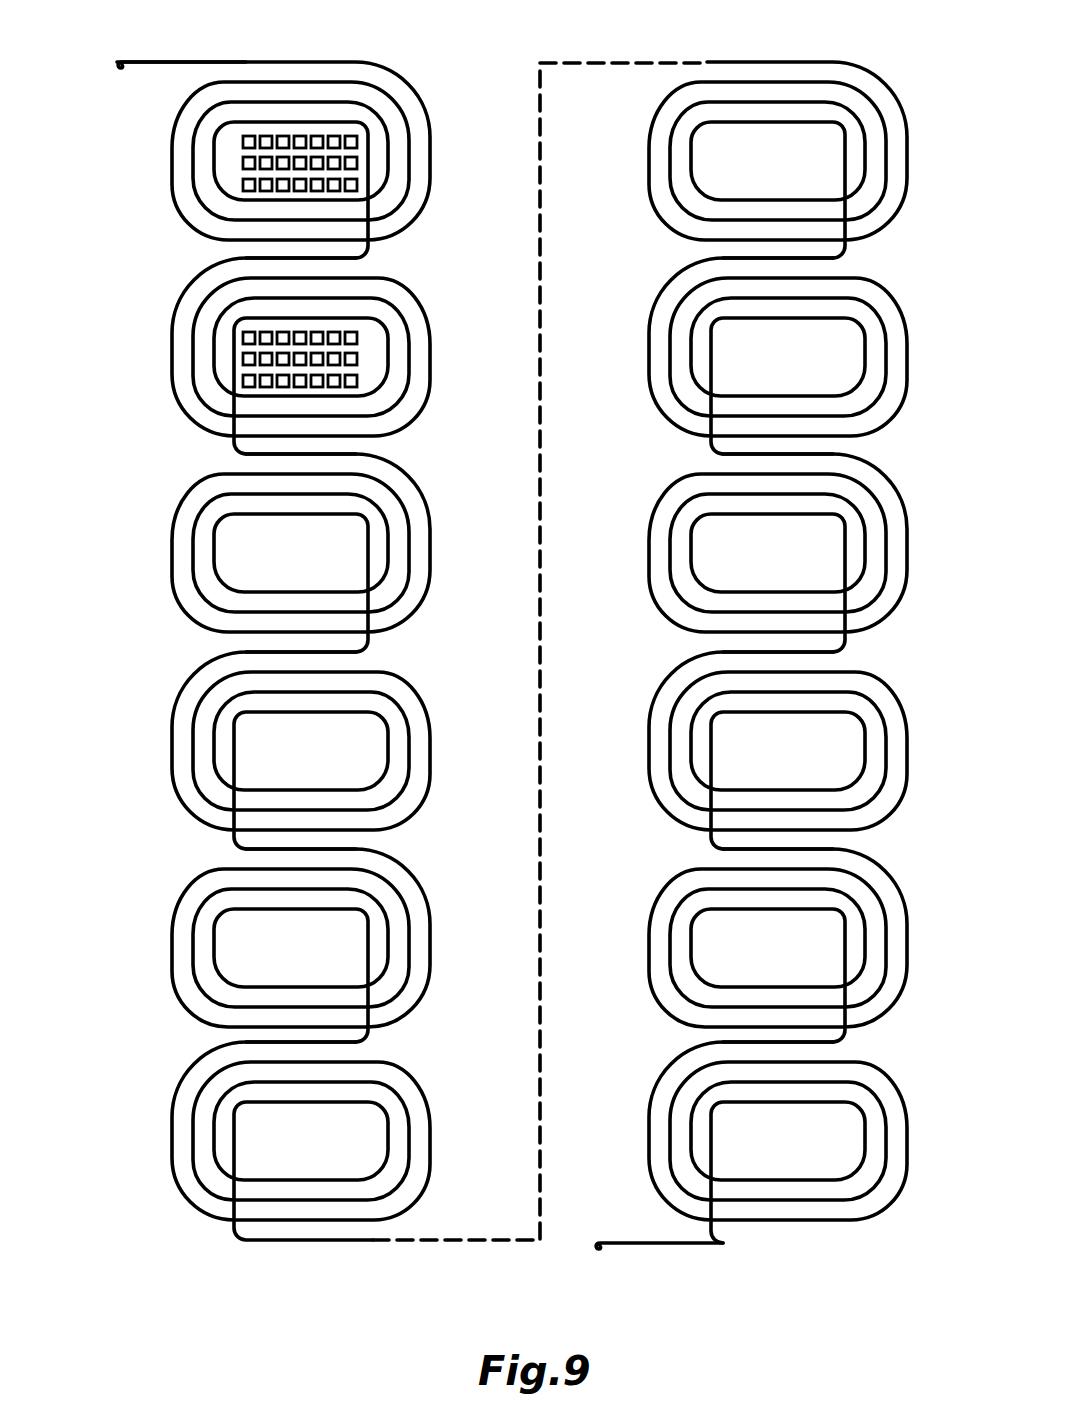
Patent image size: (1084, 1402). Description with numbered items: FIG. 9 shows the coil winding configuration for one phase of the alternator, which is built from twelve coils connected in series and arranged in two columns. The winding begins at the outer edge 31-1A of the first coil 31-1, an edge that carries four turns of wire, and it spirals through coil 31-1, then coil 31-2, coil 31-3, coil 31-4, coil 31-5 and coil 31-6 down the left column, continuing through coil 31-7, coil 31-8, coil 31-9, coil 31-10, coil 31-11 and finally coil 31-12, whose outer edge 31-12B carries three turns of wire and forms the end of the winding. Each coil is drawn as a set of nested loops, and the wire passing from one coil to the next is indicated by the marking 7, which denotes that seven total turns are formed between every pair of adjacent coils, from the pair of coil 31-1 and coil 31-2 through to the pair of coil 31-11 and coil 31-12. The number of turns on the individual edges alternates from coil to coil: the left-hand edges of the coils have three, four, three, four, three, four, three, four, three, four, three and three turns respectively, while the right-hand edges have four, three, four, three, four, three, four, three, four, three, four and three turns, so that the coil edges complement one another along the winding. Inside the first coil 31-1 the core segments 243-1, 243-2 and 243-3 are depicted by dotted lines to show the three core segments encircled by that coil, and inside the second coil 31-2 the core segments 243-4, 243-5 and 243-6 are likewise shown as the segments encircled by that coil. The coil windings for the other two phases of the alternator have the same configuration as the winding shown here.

The first coil 31-1 is at (172, 160).
The second coil 31-2 is at (172, 356).
The third coil 31-3 is at (172, 552).
The fourth coil 31-4 is at (172, 750).
The fifth coil 31-5 is at (172, 947).
The sixth coil 31-6 is at (172, 1140).
The seventh coil 31-7 is at (649, 163).
The eighth coil 31-8 is at (649, 367).
The ninth coil 31-9 is at (649, 555).
The tenth coil 31-10 is at (649, 752).
The eleventh coil 31-11 is at (649, 950).
The twelfth coil 31-12 is at (649, 1142).
The outer edge of first coil 31-1A is at (203, 62).
The outer edge of twelfth coil 31-12B is at (815, 1226).
The core segment 243-1 is at (358, 142).
The core segment 243-2 is at (358, 163).
The core segment 243-3 is at (358, 185).
The core segment 243-4 is at (358, 338).
The core segment 243-5 is at (358, 359).
The core segment 243-6 is at (358, 381).
The total turns between adjacent coils 7 is at (686, 1031).